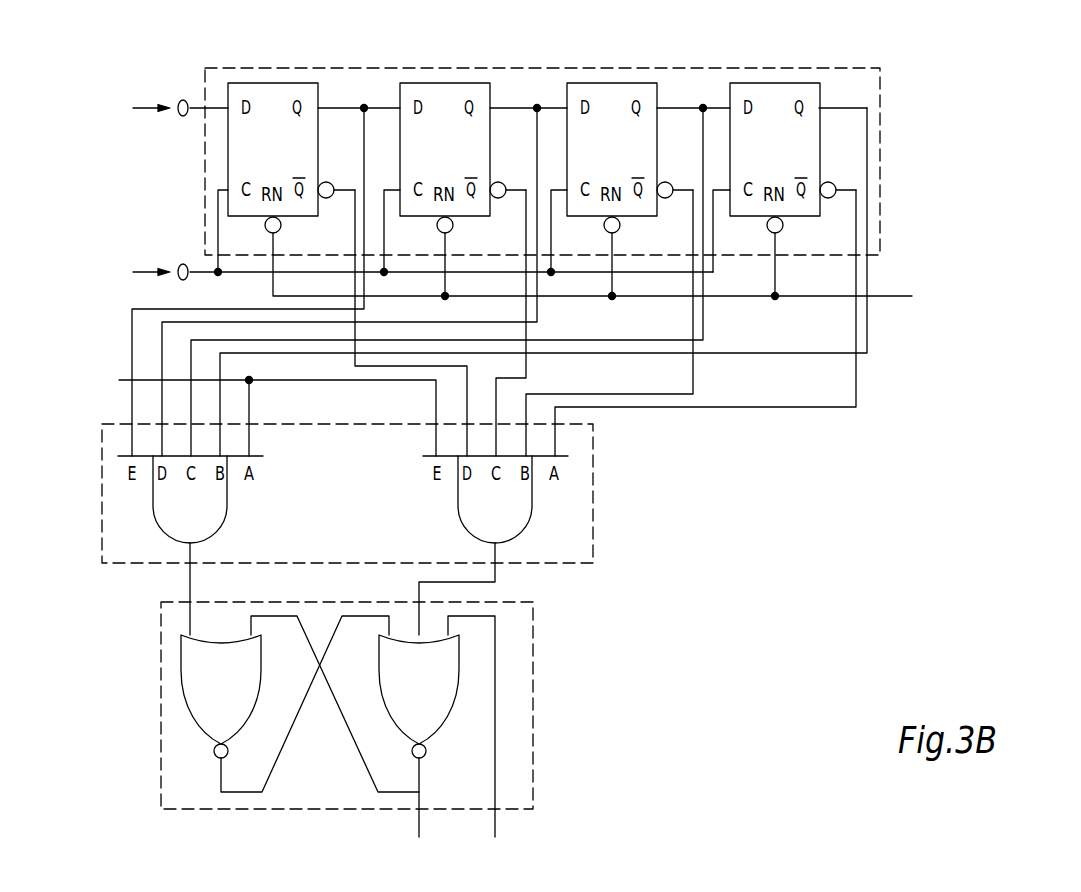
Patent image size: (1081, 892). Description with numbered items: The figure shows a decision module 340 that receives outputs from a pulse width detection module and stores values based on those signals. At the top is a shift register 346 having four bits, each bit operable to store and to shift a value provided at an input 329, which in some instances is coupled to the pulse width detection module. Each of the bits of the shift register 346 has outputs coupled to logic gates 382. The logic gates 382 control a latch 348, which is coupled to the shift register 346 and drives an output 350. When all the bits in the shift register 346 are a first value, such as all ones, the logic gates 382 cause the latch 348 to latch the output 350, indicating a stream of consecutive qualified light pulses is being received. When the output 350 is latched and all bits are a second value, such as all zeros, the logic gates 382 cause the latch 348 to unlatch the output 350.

The input 329 is at (155, 106).
The decision module 340 is at (991, 97).
The shift register 346 is at (880, 70).
The logic gates 382 is at (593, 452).
The latch 348 is at (533, 620).
The output 350 is at (420, 812).